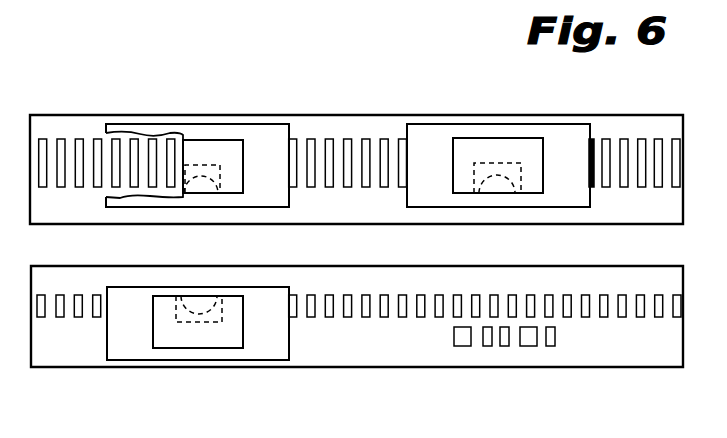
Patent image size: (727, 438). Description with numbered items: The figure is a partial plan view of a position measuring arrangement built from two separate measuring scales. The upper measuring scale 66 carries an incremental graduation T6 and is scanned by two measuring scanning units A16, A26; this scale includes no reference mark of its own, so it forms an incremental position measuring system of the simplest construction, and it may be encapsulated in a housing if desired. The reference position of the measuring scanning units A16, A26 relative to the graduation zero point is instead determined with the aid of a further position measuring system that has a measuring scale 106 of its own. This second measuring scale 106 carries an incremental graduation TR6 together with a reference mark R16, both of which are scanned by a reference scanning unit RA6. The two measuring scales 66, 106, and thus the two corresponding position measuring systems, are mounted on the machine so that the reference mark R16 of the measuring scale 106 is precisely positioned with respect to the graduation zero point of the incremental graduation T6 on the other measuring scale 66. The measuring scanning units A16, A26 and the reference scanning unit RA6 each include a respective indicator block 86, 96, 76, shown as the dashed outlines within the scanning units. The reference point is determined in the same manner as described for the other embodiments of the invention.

The measuring scale 66 is at (648, 122).
The measuring scale 106 is at (622, 355).
The incremental graduation T6 is at (98, 128).
The indicator block 86 is at (201, 176).
The indicator block 96 is at (493, 176).
The indicator block 76 is at (200, 310).
The measuring scanning unit A16 is at (273, 136).
The measuring scanning unit A26 is at (427, 136).
The reference scanning unit RA6 is at (131, 348).
The incremental graduation TR6 is at (345, 317).
The reference mark R16 is at (556, 374).